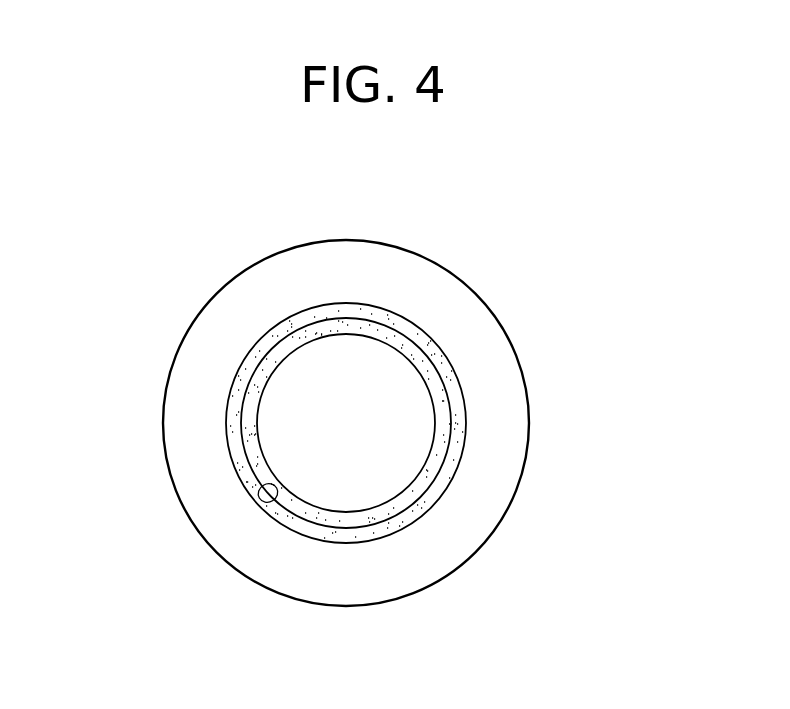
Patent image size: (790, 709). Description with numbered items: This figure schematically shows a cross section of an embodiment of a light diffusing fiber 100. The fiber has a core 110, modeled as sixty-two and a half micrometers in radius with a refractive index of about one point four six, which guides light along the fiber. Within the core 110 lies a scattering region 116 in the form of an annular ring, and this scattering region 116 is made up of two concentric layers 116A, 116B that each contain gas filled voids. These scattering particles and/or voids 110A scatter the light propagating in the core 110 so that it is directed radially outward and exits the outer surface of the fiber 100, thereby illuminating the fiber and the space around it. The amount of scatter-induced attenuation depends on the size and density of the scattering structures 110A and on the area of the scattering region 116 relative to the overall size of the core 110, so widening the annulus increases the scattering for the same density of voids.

The light diffusing fiber 100 is at (476, 228).
The core 110 is at (515, 342).
The scattering particles and/or voids 110A is at (228, 433).
The scattering region 116 is at (262, 501).
The first layer with gas filled voids 116A is at (414, 497).
The second layer with gas filled voids 116B is at (462, 448).